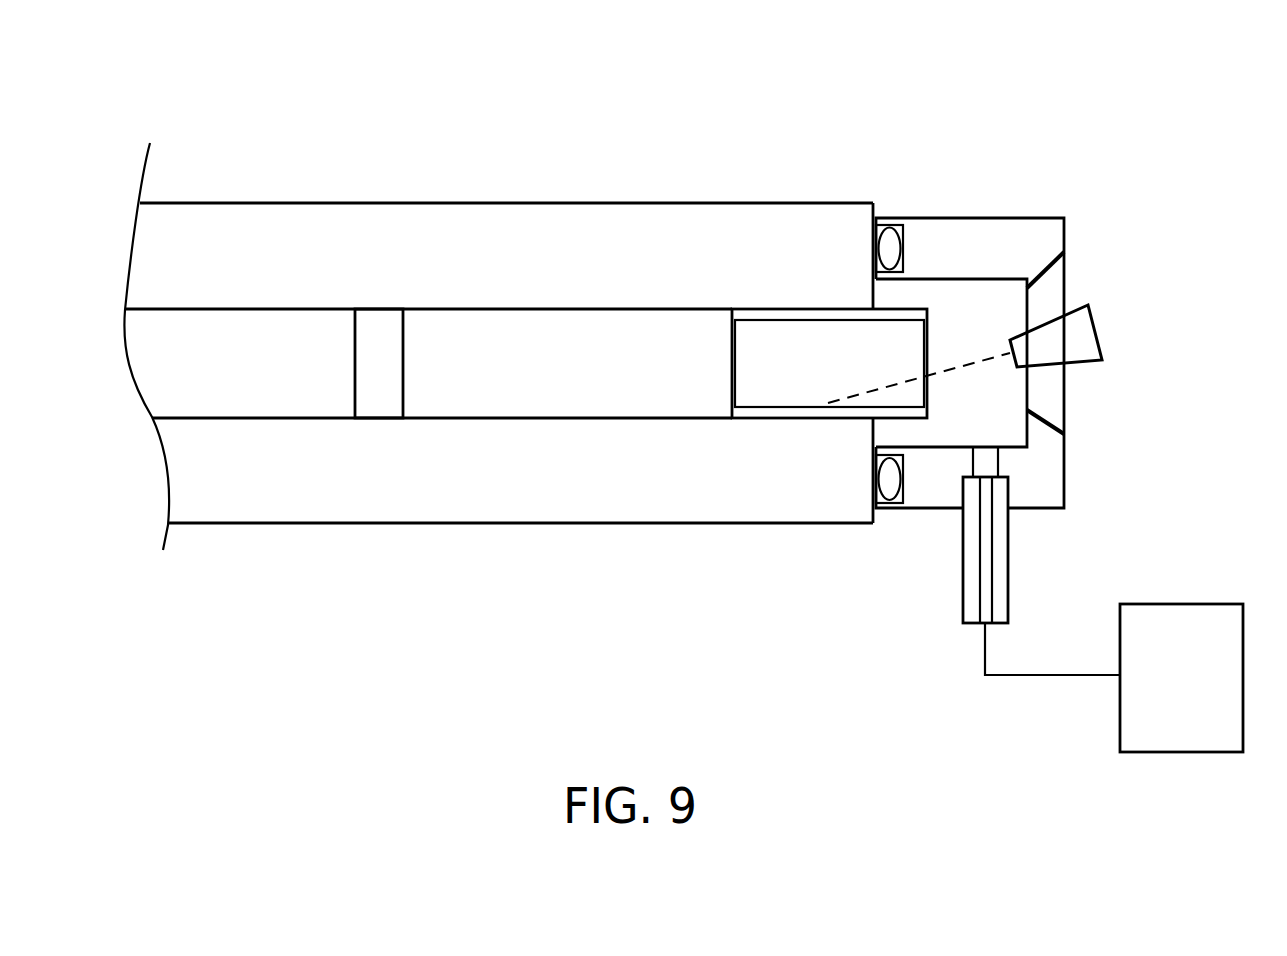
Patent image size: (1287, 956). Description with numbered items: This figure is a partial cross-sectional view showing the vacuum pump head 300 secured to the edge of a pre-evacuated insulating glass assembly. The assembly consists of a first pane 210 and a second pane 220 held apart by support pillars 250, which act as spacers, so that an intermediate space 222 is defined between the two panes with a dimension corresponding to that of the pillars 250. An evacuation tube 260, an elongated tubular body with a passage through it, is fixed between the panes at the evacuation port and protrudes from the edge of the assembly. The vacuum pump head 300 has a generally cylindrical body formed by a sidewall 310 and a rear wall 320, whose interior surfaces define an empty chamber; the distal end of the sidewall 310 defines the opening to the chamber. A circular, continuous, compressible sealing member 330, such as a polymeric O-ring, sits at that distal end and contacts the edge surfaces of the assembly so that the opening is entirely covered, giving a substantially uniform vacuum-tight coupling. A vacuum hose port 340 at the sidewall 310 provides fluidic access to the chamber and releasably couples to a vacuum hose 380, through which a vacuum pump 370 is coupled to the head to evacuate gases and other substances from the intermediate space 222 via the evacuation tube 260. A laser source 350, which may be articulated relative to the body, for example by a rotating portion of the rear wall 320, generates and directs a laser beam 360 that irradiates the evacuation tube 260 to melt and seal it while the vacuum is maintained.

The first pane 210 is at (507, 525).
The second pane 220 is at (583, 203).
The intermediate space 222 is at (570, 380).
The support pillars 250 is at (378, 318).
The evacuation tube 260 is at (773, 312).
The vacuum pump head 300 is at (1027, 206).
The sidewall 310 is at (965, 217).
The rear wall 320 is at (1064, 284).
The compressible sealing member 330 is at (876, 232).
The vacuum hose port 340 is at (1008, 553).
The laser source 350 is at (1088, 363).
The laser beam 360 is at (965, 368).
The vacuum pump 370 is at (1212, 697).
The vacuum hose 380 is at (1042, 675).